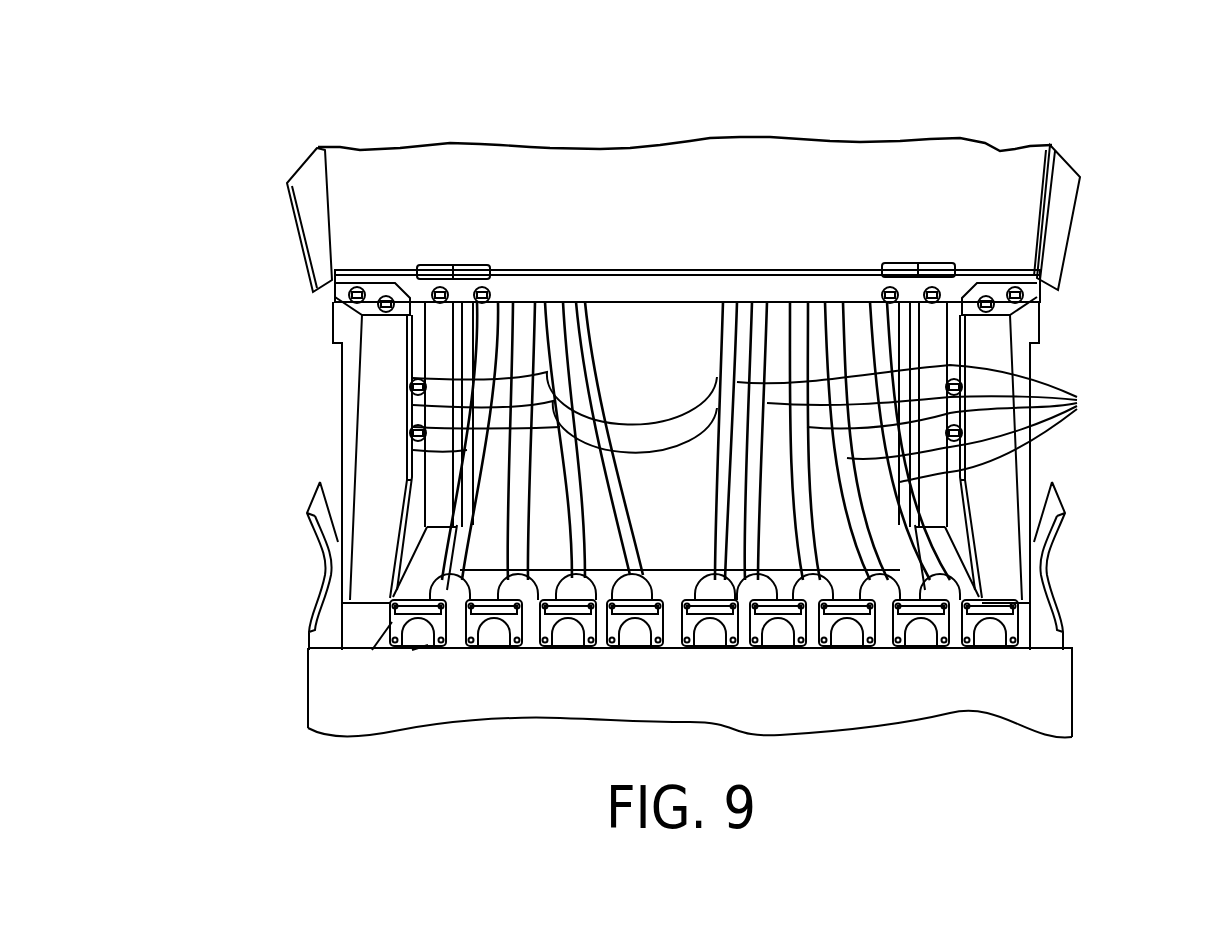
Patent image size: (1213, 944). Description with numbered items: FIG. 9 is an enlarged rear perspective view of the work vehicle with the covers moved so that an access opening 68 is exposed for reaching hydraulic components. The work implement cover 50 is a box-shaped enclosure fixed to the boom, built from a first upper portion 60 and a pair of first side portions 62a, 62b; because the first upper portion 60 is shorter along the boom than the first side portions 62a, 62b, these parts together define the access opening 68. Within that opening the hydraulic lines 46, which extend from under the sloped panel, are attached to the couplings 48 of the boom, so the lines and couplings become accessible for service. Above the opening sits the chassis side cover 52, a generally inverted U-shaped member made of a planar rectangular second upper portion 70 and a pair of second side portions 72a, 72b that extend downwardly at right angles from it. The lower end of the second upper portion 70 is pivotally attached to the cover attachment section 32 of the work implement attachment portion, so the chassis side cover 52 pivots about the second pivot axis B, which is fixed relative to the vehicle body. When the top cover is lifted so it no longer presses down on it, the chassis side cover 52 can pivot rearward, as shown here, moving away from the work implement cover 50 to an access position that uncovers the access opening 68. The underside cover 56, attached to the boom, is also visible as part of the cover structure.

The second upper portion 70 is at (770, 190).
The second side portion 72a is at (306, 193).
The second side portion 72b is at (1058, 197).
The chassis side cover 52 is at (716, 178).
The cover attachment section 32 is at (633, 293).
The second pivot axis B is at (443, 264).
The hydraulic lines 46 is at (413, 450).
The access opening 68 is at (668, 576).
The underside cover 56 is at (908, 576).
The couplings 48 is at (438, 650).
The work implement cover 50 is at (686, 538).
The first upper portion 60 is at (1002, 705).
The first side portion 62a is at (307, 703).
The first side portion 62b is at (1073, 708).